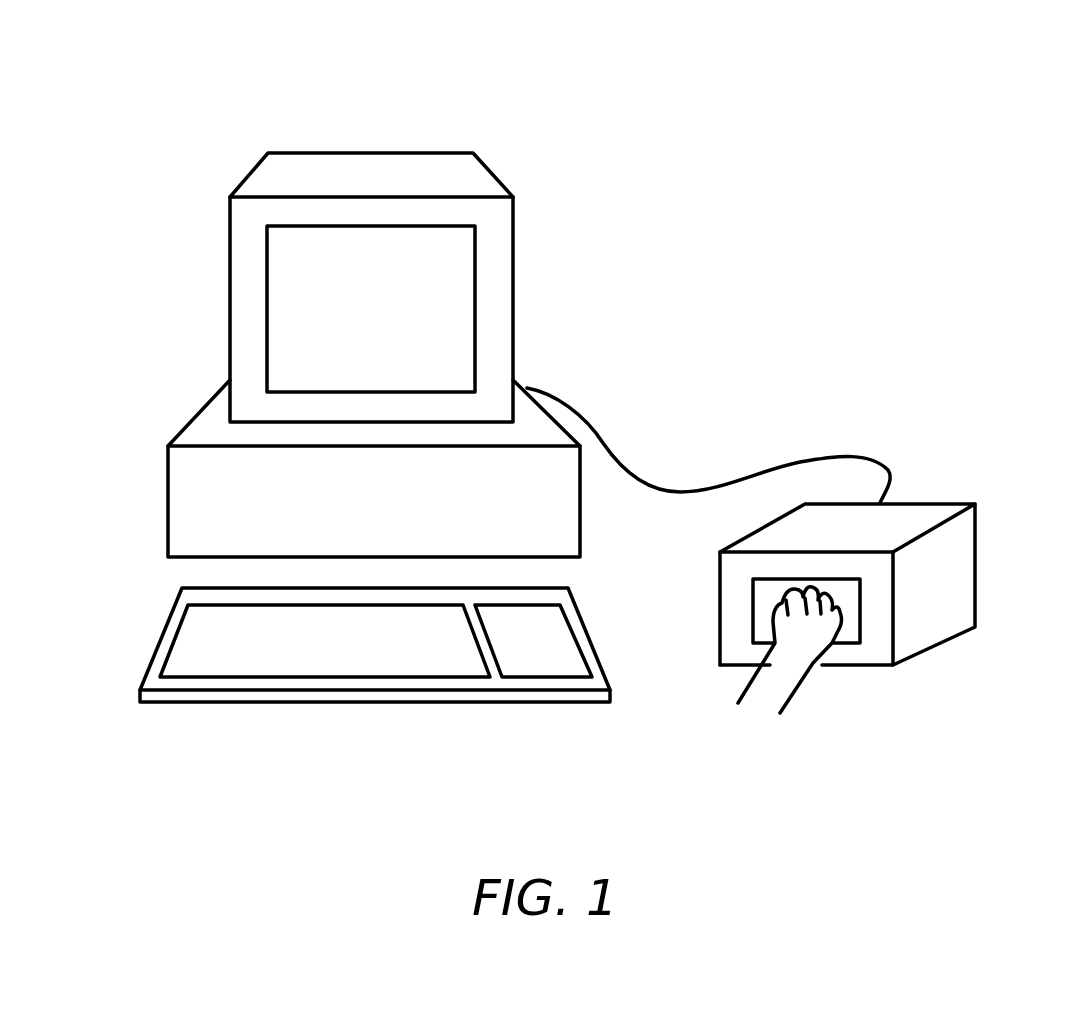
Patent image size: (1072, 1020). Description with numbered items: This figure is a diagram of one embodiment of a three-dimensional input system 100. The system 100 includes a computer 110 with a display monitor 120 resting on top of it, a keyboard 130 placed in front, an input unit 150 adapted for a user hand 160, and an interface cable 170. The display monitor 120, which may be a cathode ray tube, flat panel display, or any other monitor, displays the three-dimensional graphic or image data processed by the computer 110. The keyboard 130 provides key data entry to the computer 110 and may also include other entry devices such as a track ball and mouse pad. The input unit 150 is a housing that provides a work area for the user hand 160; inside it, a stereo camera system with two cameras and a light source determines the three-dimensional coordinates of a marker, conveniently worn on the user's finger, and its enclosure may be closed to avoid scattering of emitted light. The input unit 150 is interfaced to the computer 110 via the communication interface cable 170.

The system 100 is at (849, 107).
The computer 110 is at (537, 417).
The display monitor 120 is at (480, 172).
The keyboard 130 is at (575, 638).
The input unit 150 is at (910, 515).
The user hand 160 is at (785, 688).
The interface cable 170 is at (693, 488).